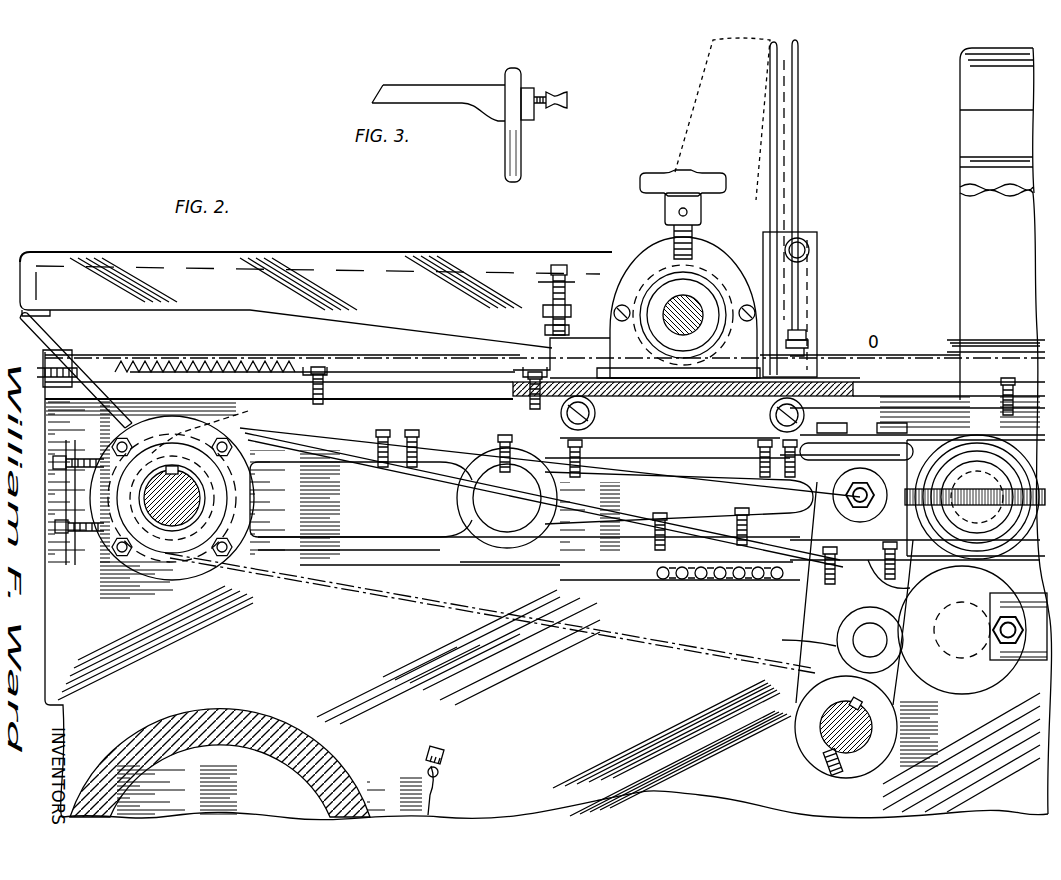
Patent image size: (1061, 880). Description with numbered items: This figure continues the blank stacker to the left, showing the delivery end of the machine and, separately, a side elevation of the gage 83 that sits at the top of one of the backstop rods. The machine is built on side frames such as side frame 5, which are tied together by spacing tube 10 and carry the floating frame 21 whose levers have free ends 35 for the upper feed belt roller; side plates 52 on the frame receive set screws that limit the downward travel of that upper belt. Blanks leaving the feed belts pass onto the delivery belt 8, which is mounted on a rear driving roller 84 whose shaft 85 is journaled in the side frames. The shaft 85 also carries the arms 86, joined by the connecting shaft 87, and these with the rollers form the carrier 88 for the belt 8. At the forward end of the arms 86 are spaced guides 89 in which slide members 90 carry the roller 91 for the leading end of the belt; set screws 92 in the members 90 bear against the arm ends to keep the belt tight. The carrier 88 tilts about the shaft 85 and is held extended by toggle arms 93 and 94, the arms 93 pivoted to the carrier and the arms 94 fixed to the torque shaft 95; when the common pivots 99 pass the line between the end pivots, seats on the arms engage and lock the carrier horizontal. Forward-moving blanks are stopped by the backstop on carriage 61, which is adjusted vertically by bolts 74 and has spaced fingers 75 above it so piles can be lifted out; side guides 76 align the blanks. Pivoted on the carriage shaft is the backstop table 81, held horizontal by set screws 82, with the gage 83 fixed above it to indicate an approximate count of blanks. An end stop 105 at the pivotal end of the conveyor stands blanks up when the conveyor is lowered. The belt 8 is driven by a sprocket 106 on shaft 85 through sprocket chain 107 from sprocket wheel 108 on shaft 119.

In FIG. 2, the side frame 5 is at (548, 506).
In FIG. 2, the delivery belt 8 is at (487, 430).
In FIG. 2, the spacing tube 10 is at (262, 712).
In FIG. 2, the floating frame 21 is at (1045, 342).
In FIG. 2, the free end of lever 35 is at (1048, 340).
In FIG. 2, the side plate 52 is at (1010, 690).
In FIG. 2, the carriage 61 is at (622, 268).
In FIG. 2, the bolt 74 is at (810, 246).
In FIG. 2, the backstop finger 75 is at (773, 176).
In FIG. 2, the side guide 76 is at (972, 222).
In FIG. 2, the backstop table 81 is at (500, 250).
In FIG. 2, the set screw 82 is at (552, 337).
In FIG. 3, the gage 83 is at (513, 70).
In FIG. 2, the gage 83 is at (797, 192).
In FIG. 2, the rear driving roller 84 is at (160, 548).
In FIG. 2, the shaft 85 is at (165, 512).
In FIG. 2, the arm 86 is at (467, 545).
In FIG. 2, the connecting shaft 87 is at (490, 499).
In FIG. 2, the carrier 88 is at (628, 540).
In FIG. 2, the guide 89 is at (1020, 440).
In FIG. 2, the slide member 90 is at (905, 578).
In FIG. 2, the roller 91 is at (937, 443).
In FIG. 2, the set screw 92 is at (990, 590).
In FIG. 2, the toggle arm 93 is at (812, 612).
In FIG. 2, the toggle arm 94 is at (793, 639).
In FIG. 2, the torque shaft 95 is at (820, 733).
In FIG. 2, the common pivot 99 is at (885, 640).
In FIG. 2, the end stop 105 is at (53, 352).
In FIG. 2, the sprocket 106 is at (216, 428).
In FIG. 2, the sprocket chain 107 is at (705, 585).
In FIG. 2, the sprocket wheel 108 is at (928, 612).
In FIG. 2, the shaft 119 is at (873, 447).